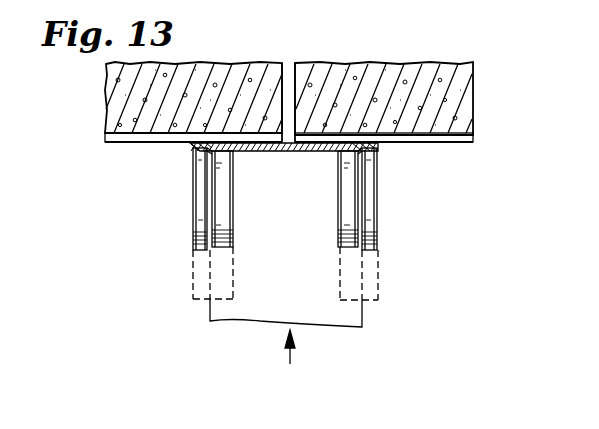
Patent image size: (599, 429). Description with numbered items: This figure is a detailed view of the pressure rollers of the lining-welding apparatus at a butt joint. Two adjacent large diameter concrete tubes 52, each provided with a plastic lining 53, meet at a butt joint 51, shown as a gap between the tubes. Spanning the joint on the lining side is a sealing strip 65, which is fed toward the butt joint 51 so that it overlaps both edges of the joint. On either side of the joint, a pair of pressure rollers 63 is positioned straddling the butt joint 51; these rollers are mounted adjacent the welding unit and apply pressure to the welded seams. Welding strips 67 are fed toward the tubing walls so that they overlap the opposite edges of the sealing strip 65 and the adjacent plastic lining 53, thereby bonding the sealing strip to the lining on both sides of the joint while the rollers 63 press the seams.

The butt joint 51 is at (287, 82).
The tube 52 is at (110, 108).
The plastic lining 53 is at (473, 138).
The pressure roller 63 is at (216, 178).
The sealing strip 65 is at (263, 150).
The welding strip 67 is at (196, 149).